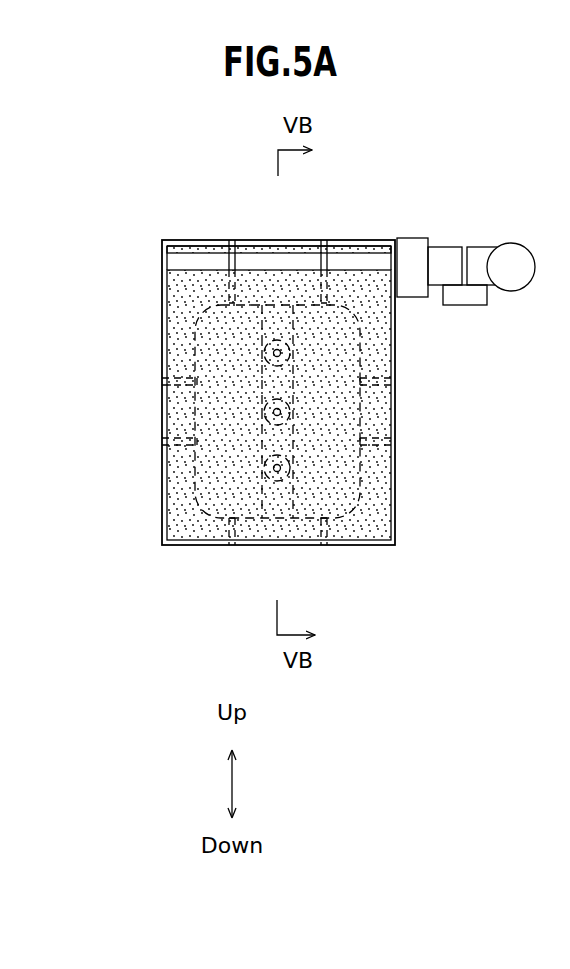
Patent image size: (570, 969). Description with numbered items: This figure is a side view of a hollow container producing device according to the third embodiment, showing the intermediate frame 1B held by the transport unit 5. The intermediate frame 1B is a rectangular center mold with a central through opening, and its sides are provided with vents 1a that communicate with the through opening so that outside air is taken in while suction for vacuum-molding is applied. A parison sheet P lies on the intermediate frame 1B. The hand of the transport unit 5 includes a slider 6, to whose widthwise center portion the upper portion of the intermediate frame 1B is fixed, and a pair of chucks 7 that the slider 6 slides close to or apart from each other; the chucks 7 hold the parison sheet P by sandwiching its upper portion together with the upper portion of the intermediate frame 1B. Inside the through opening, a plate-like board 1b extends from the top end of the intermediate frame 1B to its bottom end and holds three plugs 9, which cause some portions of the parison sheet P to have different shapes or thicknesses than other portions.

The transport unit 5 is at (490, 219).
The intermediate frame 1B is at (394, 515).
The parison sheet P is at (372, 546).
The chuck 7 is at (178, 262).
The slider 6 is at (410, 250).
The board 1b is at (293, 370).
The plug 9 is at (292, 350).
The vent 1a is at (232, 238).